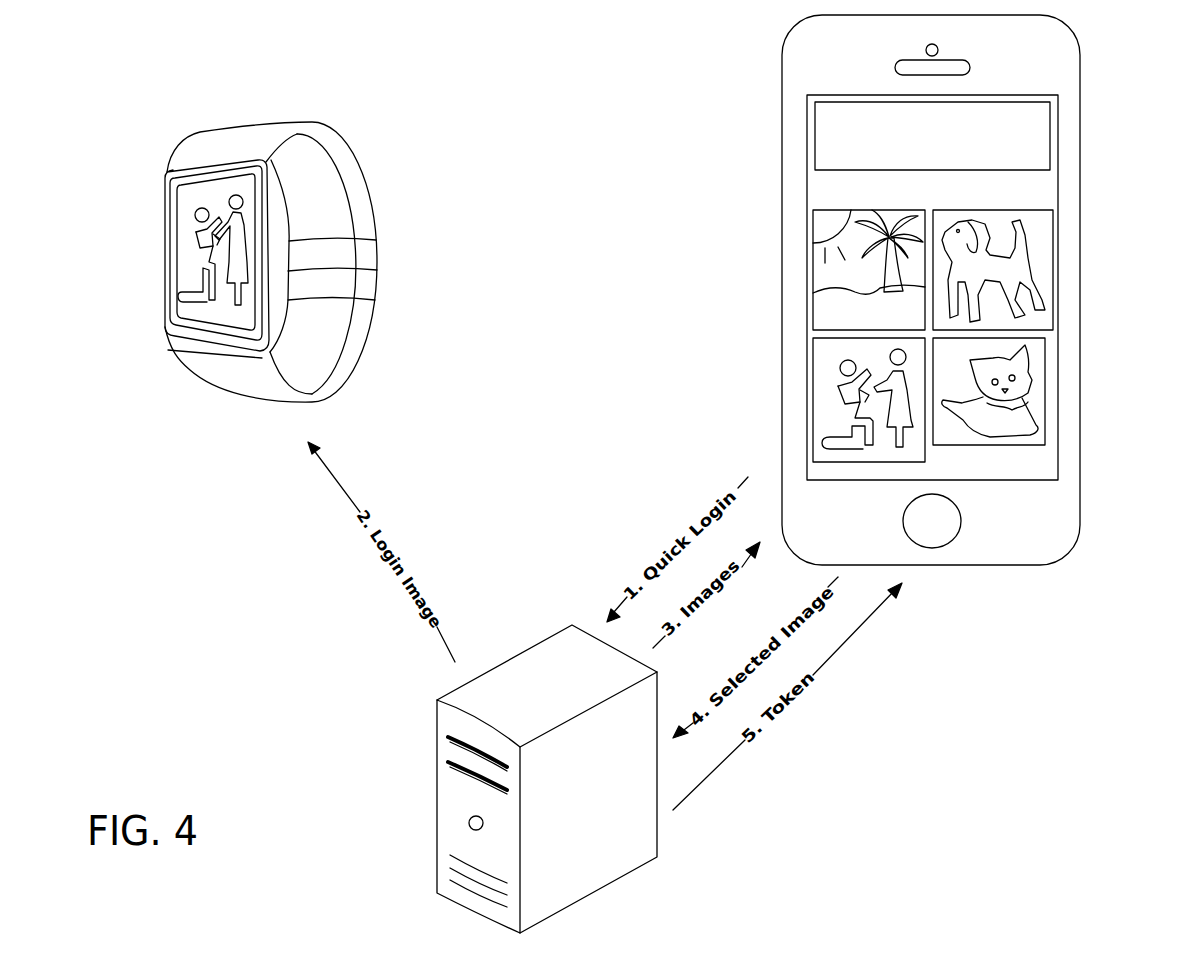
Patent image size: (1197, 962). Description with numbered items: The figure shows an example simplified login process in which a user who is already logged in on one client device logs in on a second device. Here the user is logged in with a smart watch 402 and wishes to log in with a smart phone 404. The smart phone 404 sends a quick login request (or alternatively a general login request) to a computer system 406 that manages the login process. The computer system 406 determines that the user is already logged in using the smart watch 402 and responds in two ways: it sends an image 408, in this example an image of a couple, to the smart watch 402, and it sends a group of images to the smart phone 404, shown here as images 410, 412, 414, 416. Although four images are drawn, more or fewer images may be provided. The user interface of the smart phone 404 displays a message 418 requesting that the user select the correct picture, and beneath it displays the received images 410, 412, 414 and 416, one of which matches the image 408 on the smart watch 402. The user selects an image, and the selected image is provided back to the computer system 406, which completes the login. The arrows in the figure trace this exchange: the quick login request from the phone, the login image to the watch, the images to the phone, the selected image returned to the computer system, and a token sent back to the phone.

The smart watch 402 is at (355, 163).
The smart phone 404 is at (1080, 100).
The computer system 406 is at (437, 753).
The image 408 is at (173, 248).
The image 410 is at (869, 270).
The image 412 is at (1053, 258).
The image 414 is at (815, 385).
The image 416 is at (1045, 362).
The message 418 is at (815, 128).